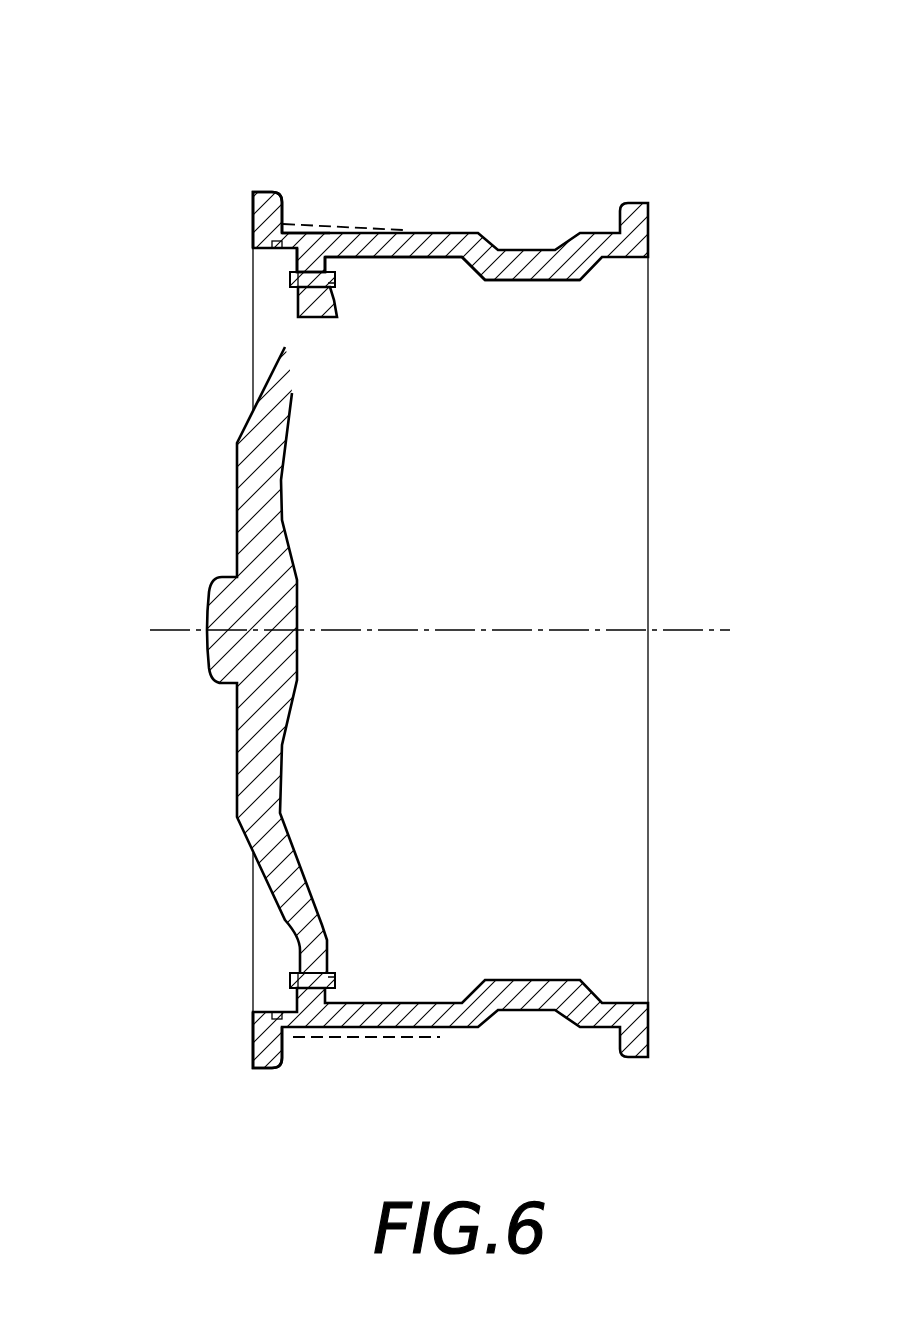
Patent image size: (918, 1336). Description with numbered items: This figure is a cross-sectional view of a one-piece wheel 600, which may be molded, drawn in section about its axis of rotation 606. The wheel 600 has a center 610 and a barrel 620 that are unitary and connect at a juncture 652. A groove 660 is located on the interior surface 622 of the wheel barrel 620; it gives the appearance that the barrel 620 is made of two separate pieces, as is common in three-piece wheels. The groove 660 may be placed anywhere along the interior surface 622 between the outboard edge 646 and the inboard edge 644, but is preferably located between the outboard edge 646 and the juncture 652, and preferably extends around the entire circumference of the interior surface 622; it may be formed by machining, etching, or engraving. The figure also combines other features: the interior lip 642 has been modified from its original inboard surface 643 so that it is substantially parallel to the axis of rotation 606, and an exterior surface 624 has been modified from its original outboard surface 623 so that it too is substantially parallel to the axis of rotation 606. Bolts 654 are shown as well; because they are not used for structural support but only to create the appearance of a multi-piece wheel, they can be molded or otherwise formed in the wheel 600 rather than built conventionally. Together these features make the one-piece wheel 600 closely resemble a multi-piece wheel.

The one-piece wheel 600 is at (278, 106).
The axis of rotation 606 is at (684, 628).
The center 610 is at (225, 753).
The barrel 620 is at (401, 173).
The interior surface 622 is at (390, 248).
The original outboard surface 623 is at (283, 248).
The exterior surface 624 is at (293, 232).
The interior lip 642 is at (280, 989).
The original inboard surface 643 is at (405, 228).
The inboard edge 644 is at (658, 862).
The outboard edge 646 is at (252, 380).
The juncture 652 is at (309, 232).
The bolts 654 is at (283, 235).
The groove 660 is at (278, 238).